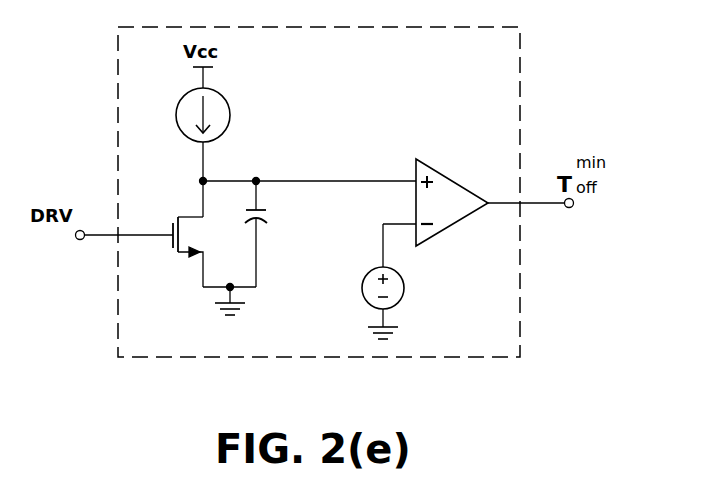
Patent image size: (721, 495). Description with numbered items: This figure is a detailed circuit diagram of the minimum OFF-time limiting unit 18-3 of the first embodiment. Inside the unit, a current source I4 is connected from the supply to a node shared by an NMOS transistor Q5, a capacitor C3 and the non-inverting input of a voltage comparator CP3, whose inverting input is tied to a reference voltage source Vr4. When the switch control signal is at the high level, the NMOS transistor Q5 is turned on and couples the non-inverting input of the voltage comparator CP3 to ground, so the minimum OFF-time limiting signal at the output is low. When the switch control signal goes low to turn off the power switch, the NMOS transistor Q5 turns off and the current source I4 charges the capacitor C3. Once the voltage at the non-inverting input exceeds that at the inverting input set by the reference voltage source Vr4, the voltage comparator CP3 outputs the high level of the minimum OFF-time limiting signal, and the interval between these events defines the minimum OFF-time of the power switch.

The minimum OFF-time limiting unit 18-3 is at (522, 79).
The current source I4 is at (215, 115).
The NMOS transistor Q5 is at (176, 218).
The capacitor C3 is at (271, 234).
The voltage comparator CP3 is at (456, 179).
The reference voltage source Vr4 is at (361, 288).